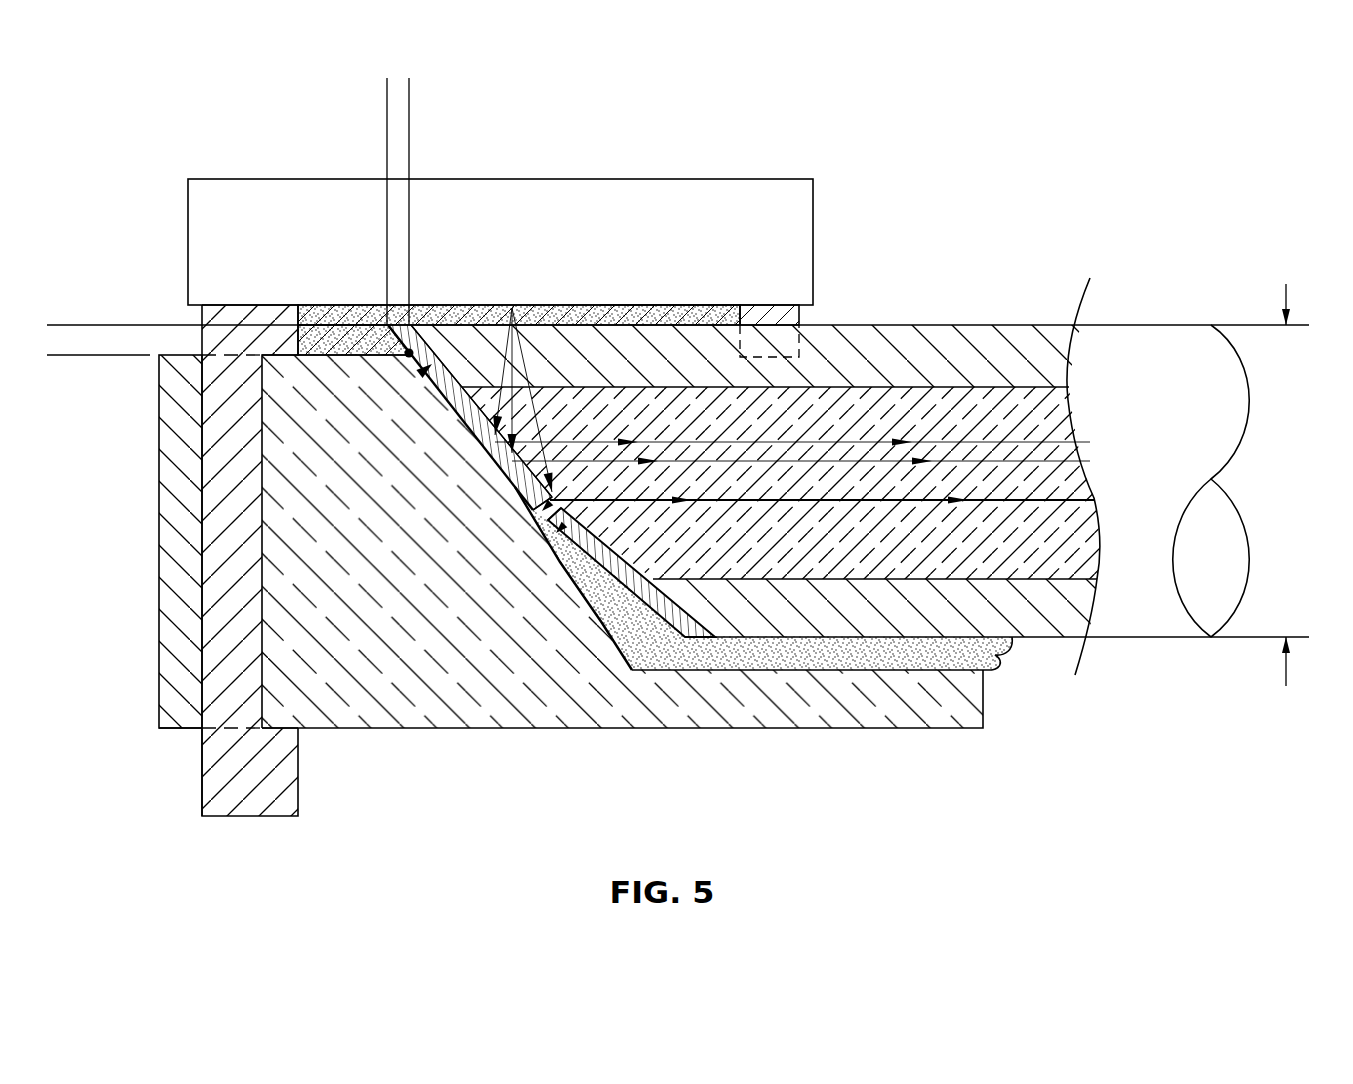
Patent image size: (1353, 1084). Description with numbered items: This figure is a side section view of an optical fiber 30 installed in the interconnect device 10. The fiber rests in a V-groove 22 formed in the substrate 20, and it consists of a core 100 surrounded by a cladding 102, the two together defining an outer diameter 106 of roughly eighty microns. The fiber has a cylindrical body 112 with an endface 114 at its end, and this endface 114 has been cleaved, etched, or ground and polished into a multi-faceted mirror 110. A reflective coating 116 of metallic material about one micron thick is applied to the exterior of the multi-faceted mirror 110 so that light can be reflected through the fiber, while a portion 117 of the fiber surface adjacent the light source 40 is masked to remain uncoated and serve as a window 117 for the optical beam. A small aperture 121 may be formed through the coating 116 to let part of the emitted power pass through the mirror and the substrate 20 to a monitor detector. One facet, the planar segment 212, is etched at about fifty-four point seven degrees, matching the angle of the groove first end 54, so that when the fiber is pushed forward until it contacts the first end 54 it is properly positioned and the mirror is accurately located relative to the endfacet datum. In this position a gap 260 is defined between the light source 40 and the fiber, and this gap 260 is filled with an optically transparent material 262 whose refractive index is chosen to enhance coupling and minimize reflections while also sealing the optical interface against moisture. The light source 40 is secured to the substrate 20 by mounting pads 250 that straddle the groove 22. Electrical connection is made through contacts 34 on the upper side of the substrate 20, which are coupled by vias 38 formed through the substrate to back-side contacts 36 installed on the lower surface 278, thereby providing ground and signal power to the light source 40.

The interconnect device 10 is at (1118, 181).
The substrate 20 is at (940, 730).
The groove 22 is at (995, 655).
The optical fiber 30 is at (1137, 392).
The contacts 34 is at (232, 313).
The contacts 36 is at (245, 807).
The via 38 is at (218, 651).
The light source 40 is at (636, 243).
The first end 54 is at (603, 623).
The core 100 is at (1090, 543).
The cladding 102 is at (1004, 330).
The outer diameter 106 is at (1288, 284).
The multi-faceted mirror 110 is at (549, 527).
The cylindrical body 112 is at (1144, 621).
The endface 114 is at (452, 372).
The reflective coating 116 is at (667, 640).
The window 117 is at (686, 305).
The aperture 121 is at (522, 505).
The planar segment 212 is at (420, 374).
The mounting pads 250 is at (772, 313).
The gap 260 is at (572, 305).
The optically transparent material 262 is at (343, 333).
The lower surface 278 is at (355, 730).